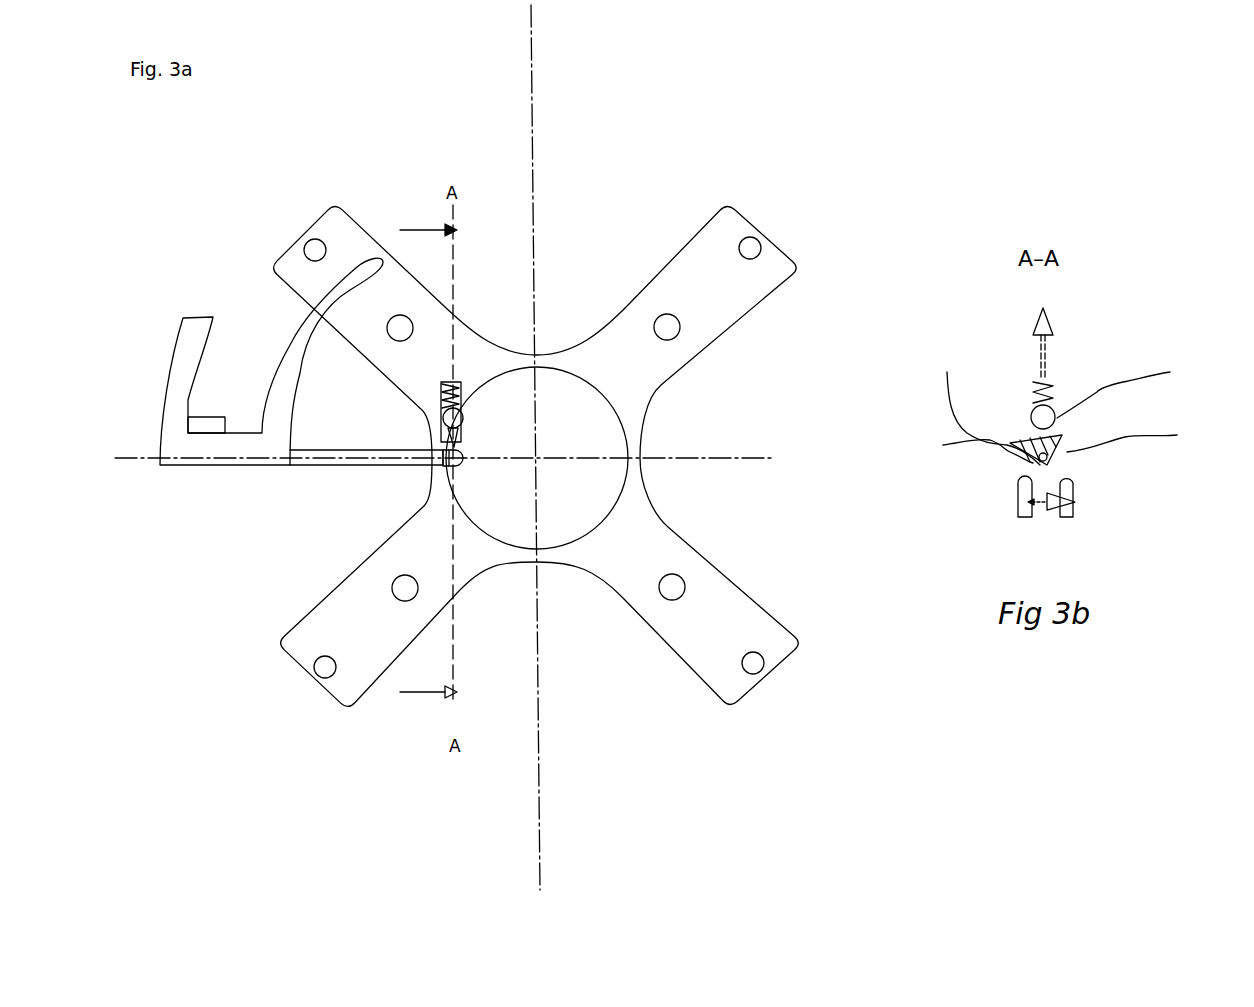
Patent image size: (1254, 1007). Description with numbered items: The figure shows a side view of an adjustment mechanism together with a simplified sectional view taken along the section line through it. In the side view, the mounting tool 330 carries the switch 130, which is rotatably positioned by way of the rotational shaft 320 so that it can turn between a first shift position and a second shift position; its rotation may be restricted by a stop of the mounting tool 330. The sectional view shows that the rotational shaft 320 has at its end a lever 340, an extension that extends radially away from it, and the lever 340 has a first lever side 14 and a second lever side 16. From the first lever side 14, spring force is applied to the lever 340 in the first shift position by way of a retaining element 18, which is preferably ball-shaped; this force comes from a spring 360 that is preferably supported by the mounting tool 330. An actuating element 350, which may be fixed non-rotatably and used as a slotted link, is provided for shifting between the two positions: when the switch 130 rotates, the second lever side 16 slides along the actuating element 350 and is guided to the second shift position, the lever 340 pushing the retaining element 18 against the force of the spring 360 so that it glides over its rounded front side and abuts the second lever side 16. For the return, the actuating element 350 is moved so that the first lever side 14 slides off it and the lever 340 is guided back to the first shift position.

In FIG. 3A, the switch 130 is at (178, 440).
In FIG. 3A, the rotational shaft 320 is at (386, 463).
In FIG. 3B, the rotational shaft 320 is at (965, 450).
In FIG. 3A, the mounting tool 330 is at (341, 222).
In FIG. 3A, the lever 340 is at (462, 404).
In FIG. 3B, the lever 340 is at (1063, 435).
In FIG. 3B, the actuating element 350 is at (1027, 488).
In FIG. 3A, the spring 360 is at (452, 384).
In FIG. 3B, the spring 360 is at (1050, 418).
In FIG. 3B, the first lever side 14 is at (981, 404).
In FIG. 3B, the second lever side 16 is at (1142, 436).
In FIG. 3B, the retaining element 18 is at (1137, 387).